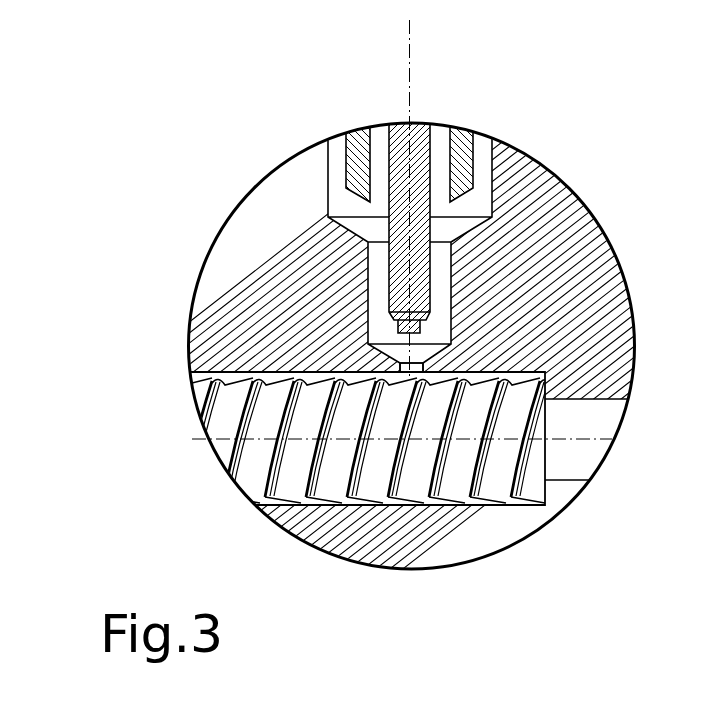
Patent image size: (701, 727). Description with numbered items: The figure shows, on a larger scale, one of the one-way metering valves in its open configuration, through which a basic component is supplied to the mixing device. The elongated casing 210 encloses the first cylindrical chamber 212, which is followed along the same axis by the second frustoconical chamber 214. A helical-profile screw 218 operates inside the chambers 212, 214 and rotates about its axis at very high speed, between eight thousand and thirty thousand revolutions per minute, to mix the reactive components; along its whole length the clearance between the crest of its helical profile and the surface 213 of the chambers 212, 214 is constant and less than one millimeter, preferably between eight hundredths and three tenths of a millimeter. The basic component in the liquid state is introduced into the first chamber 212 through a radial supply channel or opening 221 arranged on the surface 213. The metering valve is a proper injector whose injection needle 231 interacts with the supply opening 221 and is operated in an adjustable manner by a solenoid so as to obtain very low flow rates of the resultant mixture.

The elongated casing 210 is at (605, 312).
The first cylindrical chamber 212 is at (347, 487).
The second frustoconical chamber 214 is at (313, 497).
The surface of the chambers 213 is at (436, 506).
The helical-profile screw 218 is at (225, 445).
The radial supply channel or opening 221 is at (418, 368).
The injection needle 231 is at (430, 125).